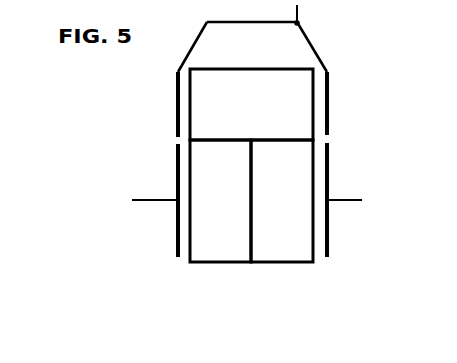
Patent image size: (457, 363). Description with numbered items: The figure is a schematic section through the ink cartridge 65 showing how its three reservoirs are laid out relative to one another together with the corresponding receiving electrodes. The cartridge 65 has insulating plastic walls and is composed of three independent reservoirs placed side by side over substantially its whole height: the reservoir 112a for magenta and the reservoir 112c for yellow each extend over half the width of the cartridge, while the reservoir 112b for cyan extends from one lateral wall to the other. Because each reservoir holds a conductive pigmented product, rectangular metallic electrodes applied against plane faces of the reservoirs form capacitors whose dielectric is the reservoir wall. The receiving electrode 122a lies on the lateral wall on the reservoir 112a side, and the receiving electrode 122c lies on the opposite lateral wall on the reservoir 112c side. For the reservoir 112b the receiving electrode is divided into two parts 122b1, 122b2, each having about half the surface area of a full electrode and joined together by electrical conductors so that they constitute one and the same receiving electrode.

The cartridge 65 is at (262, 293).
The reservoir for magenta 112a is at (237, 235).
The reservoir for cyan 112b is at (293, 120).
The reservoir for yellow 112c is at (280, 238).
The receiving electrode 122a is at (178, 163).
The receiving electrode part 122b1 is at (178, 96).
The receiving electrode part 122b2 is at (327, 97).
The receiving electrode 122c is at (327, 165).